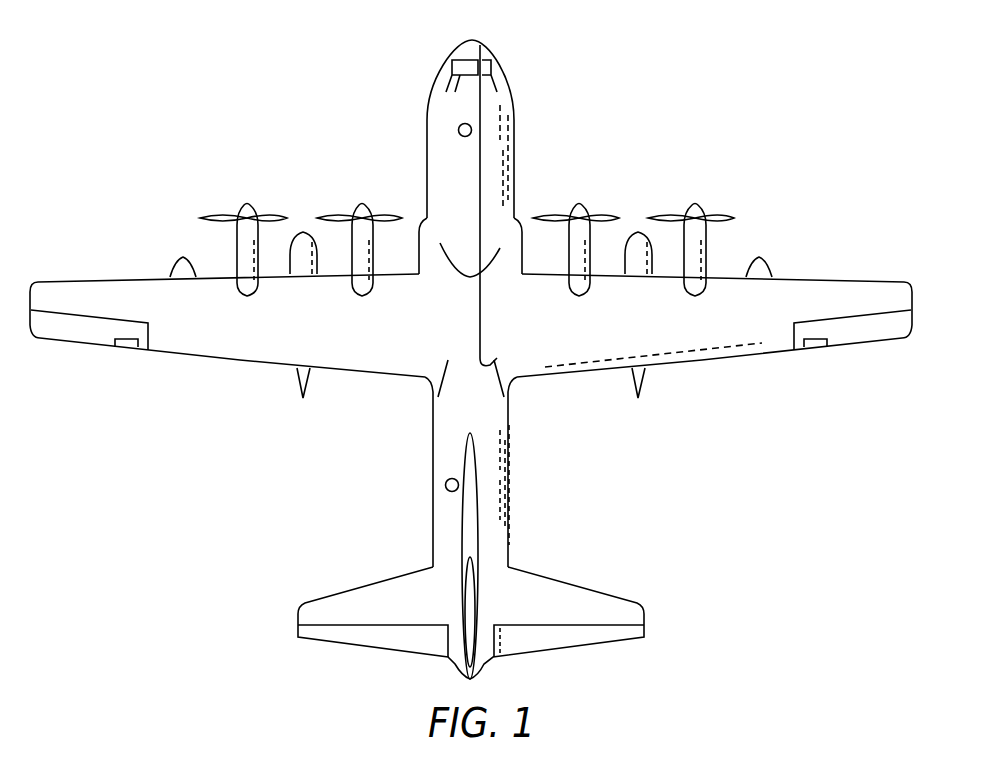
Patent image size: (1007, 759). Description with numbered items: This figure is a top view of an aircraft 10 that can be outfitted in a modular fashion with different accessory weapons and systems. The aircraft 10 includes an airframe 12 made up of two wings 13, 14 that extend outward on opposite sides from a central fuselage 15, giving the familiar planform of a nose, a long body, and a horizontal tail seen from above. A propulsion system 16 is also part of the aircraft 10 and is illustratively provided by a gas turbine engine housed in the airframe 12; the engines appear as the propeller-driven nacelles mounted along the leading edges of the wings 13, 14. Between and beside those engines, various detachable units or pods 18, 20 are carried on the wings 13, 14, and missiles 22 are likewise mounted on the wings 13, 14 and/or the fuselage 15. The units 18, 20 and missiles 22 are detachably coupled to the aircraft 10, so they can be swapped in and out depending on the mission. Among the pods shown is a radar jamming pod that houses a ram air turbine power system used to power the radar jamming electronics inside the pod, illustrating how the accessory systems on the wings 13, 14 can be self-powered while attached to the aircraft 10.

The aircraft 10 is at (243, 68).
The airframe 12 is at (122, 108).
The wing 13 is at (112, 272).
The wing 14 is at (818, 268).
The fuselage 15 is at (450, 128).
The propulsion system 16 is at (235, 207).
The detachable unit/pod 18 is at (307, 222).
The detachable unit/pod 20 is at (632, 220).
The missile 22 is at (170, 252).